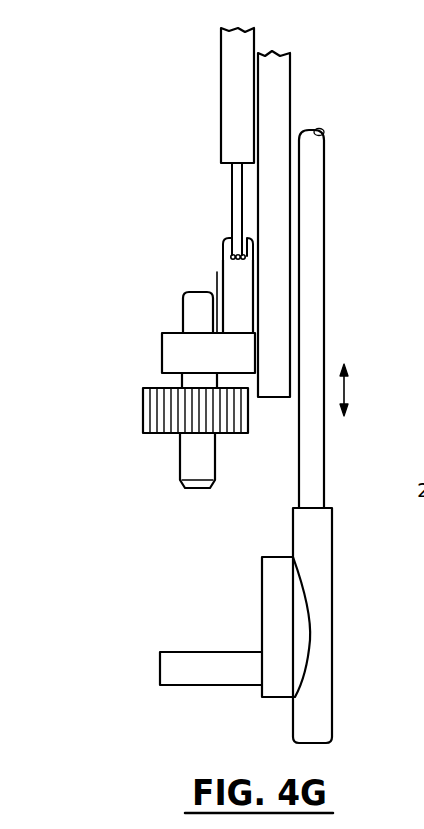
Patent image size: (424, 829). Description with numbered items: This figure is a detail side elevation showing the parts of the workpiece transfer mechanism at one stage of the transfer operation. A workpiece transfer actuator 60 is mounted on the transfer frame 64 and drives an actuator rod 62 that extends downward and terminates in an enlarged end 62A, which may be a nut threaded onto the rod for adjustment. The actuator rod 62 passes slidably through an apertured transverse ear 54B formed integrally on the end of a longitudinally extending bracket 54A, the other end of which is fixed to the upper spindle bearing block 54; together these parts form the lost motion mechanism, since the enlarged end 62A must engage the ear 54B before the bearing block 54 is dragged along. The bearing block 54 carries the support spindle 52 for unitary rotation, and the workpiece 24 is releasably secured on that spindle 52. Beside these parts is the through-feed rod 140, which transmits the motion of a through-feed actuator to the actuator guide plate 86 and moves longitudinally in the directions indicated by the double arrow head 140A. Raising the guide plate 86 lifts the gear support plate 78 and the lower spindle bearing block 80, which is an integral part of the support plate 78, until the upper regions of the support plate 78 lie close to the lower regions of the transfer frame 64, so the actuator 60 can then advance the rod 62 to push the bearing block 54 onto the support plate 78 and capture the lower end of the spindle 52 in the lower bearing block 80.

The workpiece transfer actuator 60 is at (240, 78).
The transfer frame 64 is at (280, 95).
The actuator rod 62 is at (236, 183).
The enlarged end 62A is at (250, 258).
The apertured transverse ear 54B is at (226, 240).
The longitudinally extending bracket 54A is at (222, 272).
The upper spindle bearing block 54 is at (175, 352).
The workpiece 24 is at (165, 406).
The support spindle 52 is at (195, 465).
The through-feed rod 140 is at (310, 316).
The double arrow head 140A is at (346, 390).
The gear support plate 78 is at (280, 598).
The lower spindle bearing block 80 is at (224, 672).
The actuator guide plate 86 is at (313, 712).